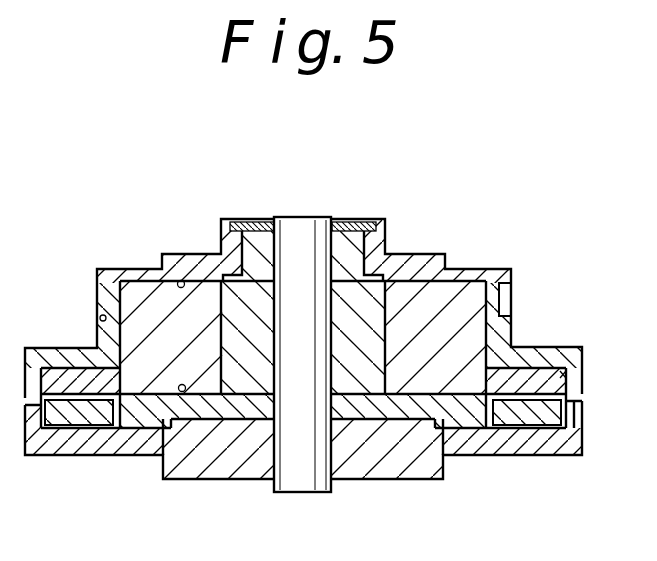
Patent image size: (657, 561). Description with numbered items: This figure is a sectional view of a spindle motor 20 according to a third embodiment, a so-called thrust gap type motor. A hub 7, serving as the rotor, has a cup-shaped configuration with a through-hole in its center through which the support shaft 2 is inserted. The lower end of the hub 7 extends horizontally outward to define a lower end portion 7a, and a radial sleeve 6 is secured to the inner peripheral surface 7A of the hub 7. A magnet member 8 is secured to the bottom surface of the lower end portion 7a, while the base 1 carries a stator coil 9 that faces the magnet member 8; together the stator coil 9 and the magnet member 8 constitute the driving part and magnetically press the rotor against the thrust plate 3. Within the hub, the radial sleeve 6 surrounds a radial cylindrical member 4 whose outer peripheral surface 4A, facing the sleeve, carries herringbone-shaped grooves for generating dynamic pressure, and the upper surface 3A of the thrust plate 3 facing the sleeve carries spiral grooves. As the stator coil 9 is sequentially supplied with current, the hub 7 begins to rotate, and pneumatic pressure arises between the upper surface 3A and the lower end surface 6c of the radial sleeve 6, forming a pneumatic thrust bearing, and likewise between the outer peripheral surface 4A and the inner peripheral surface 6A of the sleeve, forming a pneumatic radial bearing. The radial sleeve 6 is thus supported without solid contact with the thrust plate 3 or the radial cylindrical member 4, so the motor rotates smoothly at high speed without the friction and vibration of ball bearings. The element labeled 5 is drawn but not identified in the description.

The base 1 is at (175, 481).
The support shaft 2 is at (320, 491).
The thrust plate 3 is at (262, 410).
The upper surface of the thrust plate 3A is at (160, 447).
The radial cylindrical member 4 is at (368, 368).
The outer peripheral surface of the radial cylindrical member 4A is at (389, 300).
The seal 5 is at (258, 224).
The radial sleeve 6 is at (450, 298).
The inner peripheral surface of the radial sleeve 6A is at (222, 322).
The lower end surface of the radial sleeve 6c is at (161, 447).
The hub 7 is at (140, 270).
The inner peripheral surface of the hub 7A is at (180, 280).
The lower end portion of the hub 7a is at (541, 345).
The magnet member 8 is at (562, 375).
The stator coil 9 is at (545, 420).
The spindle motor 20 is at (320, 212).